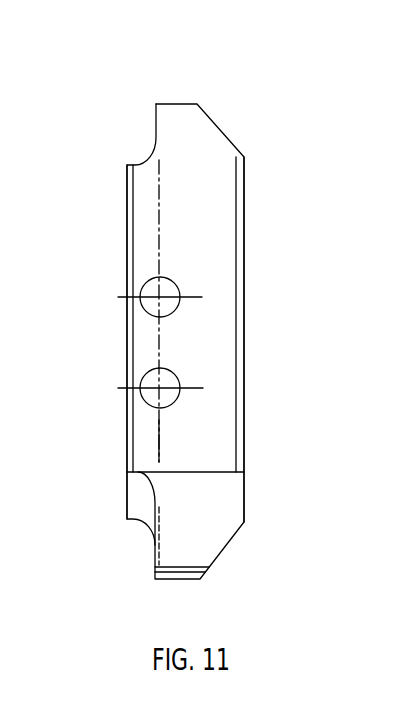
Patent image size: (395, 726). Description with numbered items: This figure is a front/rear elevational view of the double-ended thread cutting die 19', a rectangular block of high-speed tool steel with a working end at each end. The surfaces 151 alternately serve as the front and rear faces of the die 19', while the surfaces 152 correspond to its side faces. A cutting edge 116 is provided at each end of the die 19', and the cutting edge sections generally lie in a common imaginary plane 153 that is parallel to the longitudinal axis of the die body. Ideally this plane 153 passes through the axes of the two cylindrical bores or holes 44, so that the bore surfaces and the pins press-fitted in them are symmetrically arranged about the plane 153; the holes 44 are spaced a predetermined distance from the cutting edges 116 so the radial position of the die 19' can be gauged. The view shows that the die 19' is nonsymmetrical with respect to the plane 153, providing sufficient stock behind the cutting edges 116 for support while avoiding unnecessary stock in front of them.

The double-ended thread cutting die 19' is at (150, 289).
The cutting edge 116 is at (148, 105).
The surfaces serving as front and rear faces 151 is at (182, 227).
The cylindrical bores or holes 44 is at (144, 288).
The side faces 152 is at (126, 334).
The imaginary plane 153 is at (160, 433).